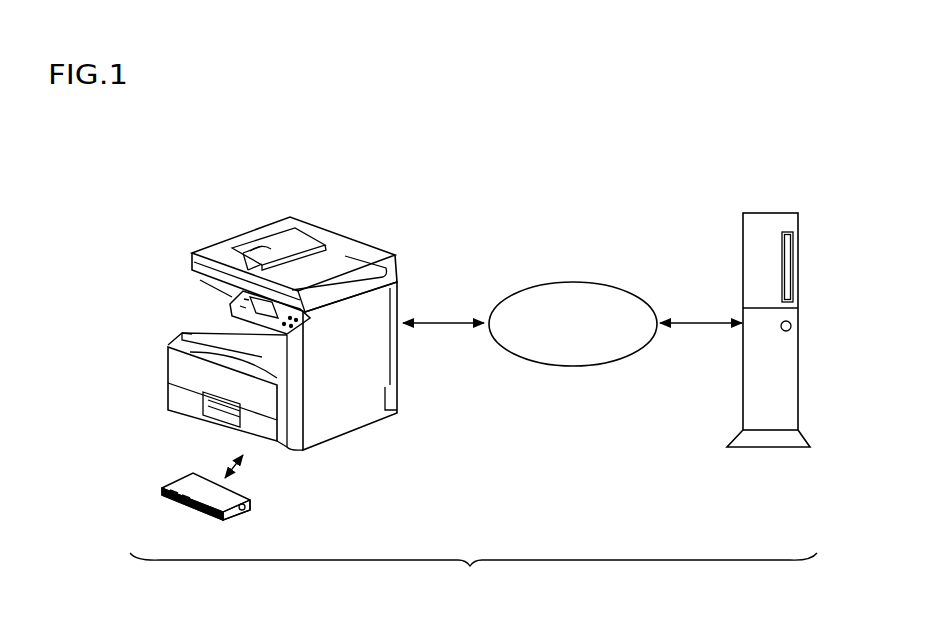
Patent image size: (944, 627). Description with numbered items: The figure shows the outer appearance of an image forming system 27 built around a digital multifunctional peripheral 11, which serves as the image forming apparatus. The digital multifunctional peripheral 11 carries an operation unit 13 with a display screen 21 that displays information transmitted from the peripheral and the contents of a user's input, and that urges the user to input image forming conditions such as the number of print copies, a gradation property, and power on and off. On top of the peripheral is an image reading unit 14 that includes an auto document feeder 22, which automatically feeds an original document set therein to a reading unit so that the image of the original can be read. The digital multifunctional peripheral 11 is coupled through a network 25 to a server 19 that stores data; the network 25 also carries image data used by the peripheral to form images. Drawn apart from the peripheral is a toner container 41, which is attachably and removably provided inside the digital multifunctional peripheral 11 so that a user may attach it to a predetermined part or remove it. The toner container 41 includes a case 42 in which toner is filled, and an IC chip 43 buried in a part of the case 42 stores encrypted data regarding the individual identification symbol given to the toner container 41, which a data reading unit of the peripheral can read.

The digital multifunctional peripheral 11 is at (198, 203).
The operation unit 13 is at (230, 297).
The image reading unit 14 is at (430, 232).
The server 19 is at (798, 233).
The display screen 21 is at (237, 300).
The auto document feeder 22 is at (338, 253).
The network 25 is at (645, 298).
The image forming system 27 is at (473, 576).
The toner container 41 is at (186, 468).
The case 42 is at (233, 500).
The IC chip 43 is at (192, 490).